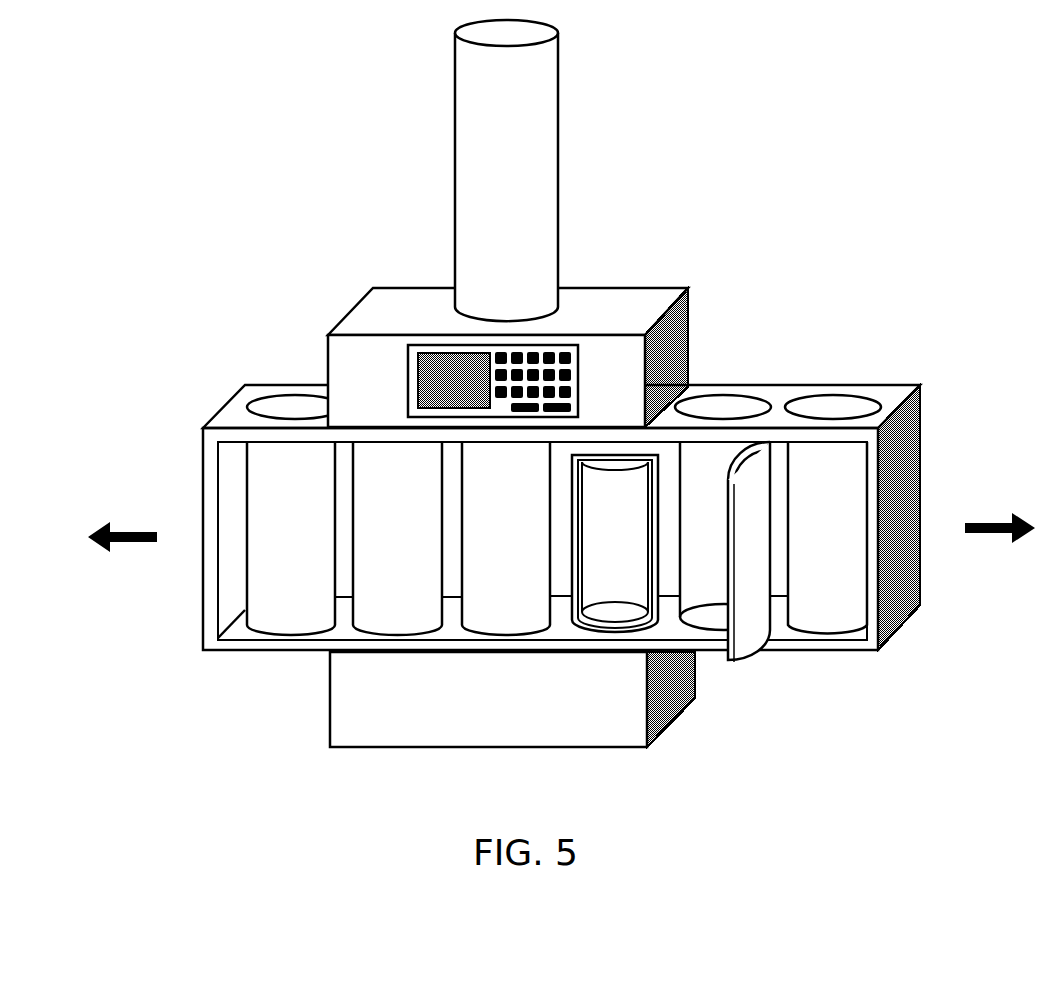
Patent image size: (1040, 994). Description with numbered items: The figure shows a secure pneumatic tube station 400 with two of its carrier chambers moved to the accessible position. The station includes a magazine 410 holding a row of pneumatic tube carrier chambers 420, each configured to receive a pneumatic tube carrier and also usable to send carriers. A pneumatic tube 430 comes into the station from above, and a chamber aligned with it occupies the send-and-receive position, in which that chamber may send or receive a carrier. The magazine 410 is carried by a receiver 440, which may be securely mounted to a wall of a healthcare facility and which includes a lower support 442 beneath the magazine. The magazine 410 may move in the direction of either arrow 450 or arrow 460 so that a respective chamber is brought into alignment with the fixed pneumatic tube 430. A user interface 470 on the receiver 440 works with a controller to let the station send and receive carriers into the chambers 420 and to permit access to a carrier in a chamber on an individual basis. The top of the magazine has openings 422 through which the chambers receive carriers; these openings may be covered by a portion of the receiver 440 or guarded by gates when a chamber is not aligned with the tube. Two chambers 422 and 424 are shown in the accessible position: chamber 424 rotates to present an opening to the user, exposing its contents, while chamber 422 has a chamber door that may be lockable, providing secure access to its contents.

The pneumatic tube station 400 is at (246, 142).
The magazine 410 is at (238, 390).
The pneumatic tube carrier chambers 420 is at (373, 598).
The openings / chamber with lockable door 422 is at (762, 398).
The chamber 424 is at (625, 587).
The pneumatic tube 430 is at (532, 193).
The receiver 440 is at (652, 300).
The lower support 442 is at (347, 708).
The arrow 450 is at (1000, 547).
The arrow 460 is at (122, 553).
The user interface 470 is at (405, 378).